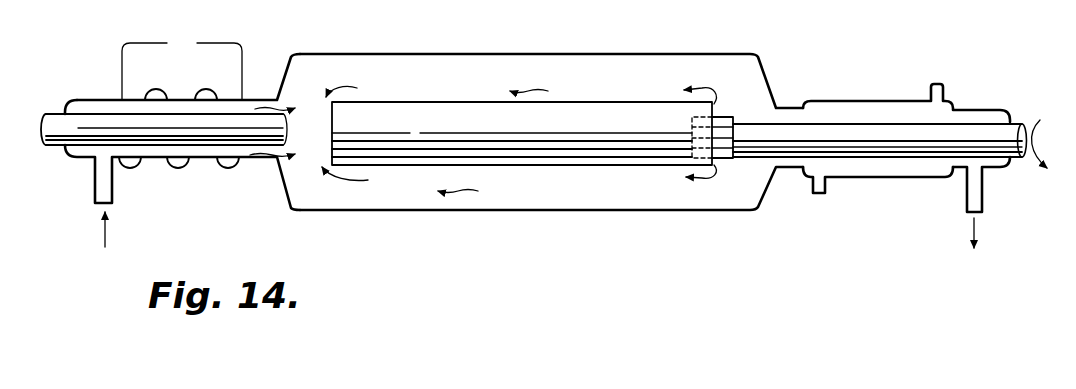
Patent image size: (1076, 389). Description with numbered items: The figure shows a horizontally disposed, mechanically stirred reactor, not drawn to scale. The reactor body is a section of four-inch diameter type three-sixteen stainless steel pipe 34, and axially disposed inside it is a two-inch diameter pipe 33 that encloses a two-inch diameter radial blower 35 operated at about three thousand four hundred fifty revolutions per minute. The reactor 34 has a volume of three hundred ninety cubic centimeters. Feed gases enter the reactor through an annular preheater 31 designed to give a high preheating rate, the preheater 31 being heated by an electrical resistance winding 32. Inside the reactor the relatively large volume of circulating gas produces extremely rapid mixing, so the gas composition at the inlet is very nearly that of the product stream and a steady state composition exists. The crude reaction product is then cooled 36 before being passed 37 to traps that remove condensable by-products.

The annular preheater 31 is at (218, 185).
The electrical resistance winding 32 is at (148, 93).
The pipe 33 is at (553, 108).
The stainless steel pipe 34 is at (538, 212).
The radial blower 35 is at (731, 118).
The cooler 36 is at (884, 177).
The outlet passage 37 is at (983, 190).